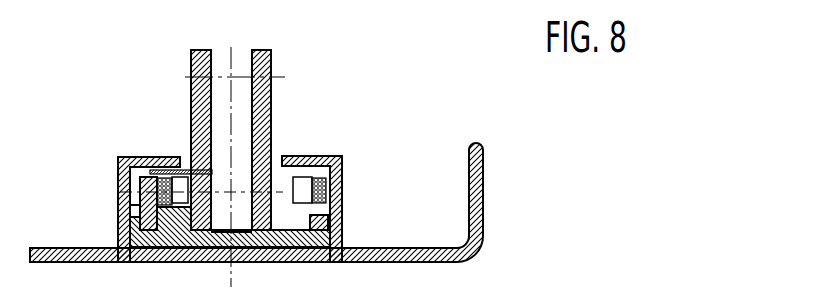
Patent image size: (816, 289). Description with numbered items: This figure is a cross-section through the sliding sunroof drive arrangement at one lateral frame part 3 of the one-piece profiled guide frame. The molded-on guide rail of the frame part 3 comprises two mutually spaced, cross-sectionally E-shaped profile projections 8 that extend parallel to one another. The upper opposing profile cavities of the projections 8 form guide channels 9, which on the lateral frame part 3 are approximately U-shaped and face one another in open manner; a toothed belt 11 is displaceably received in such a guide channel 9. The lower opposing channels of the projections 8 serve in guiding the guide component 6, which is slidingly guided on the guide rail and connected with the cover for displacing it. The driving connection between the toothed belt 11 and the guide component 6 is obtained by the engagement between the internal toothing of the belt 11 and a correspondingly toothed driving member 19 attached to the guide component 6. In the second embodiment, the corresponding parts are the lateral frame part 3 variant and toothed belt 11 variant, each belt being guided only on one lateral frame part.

The lateral frame part 3 is at (483, 160).
The guide component 6 is at (280, 108).
The profile projection 8 is at (117, 173).
The guide channel 9 is at (135, 173).
The toothed belt 11 is at (313, 227).
The driving member 19 is at (140, 203).